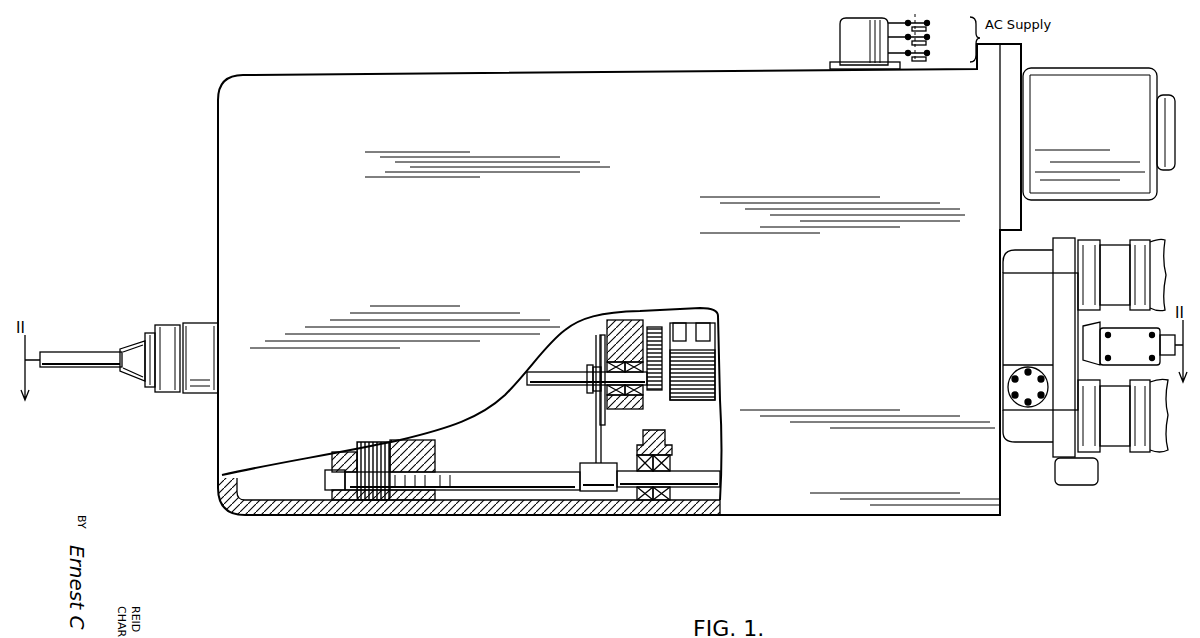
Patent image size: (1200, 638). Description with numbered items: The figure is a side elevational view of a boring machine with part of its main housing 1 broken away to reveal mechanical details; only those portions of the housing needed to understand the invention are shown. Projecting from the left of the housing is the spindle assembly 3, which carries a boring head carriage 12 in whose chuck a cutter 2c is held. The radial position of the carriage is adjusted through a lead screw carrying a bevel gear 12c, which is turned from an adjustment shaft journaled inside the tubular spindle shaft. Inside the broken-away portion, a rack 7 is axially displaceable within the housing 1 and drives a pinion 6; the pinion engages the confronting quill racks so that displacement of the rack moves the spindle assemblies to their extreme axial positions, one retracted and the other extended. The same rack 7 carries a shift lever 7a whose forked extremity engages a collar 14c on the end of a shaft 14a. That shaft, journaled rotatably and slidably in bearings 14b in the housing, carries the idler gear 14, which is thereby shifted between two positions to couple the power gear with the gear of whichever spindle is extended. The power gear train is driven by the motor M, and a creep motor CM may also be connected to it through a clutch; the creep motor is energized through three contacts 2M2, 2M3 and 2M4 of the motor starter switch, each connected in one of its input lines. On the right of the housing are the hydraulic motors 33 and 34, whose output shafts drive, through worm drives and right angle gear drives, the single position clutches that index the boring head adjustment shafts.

The main housing 1 is at (218, 186).
The cutter 2c is at (88, 352).
The spindle assembly 3 is at (108, 345).
The boring head carriage 12 is at (132, 340).
The bevel gear 12c is at (152, 333).
The pinion 6 is at (372, 500).
The rack 7 is at (488, 490).
The shift lever 7a is at (596, 428).
The idler gear 14 is at (703, 398).
The shaft 14a is at (658, 390).
The bearings 14b is at (614, 409).
The collar 14c is at (588, 393).
The hydraulic motor 33 is at (1135, 245).
The hydraulic motor 34 is at (1140, 455).
The creep motor CM is at (838, 25).
The motor M is at (1105, 72).
The contact 2M2 is at (922, 26).
The contact 2M3 is at (922, 41).
The contact 2M4 is at (922, 57).